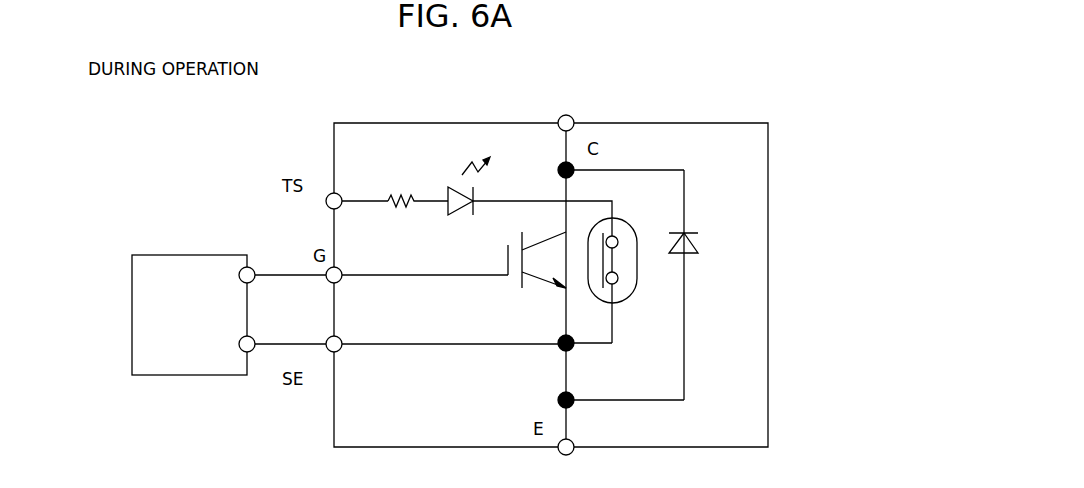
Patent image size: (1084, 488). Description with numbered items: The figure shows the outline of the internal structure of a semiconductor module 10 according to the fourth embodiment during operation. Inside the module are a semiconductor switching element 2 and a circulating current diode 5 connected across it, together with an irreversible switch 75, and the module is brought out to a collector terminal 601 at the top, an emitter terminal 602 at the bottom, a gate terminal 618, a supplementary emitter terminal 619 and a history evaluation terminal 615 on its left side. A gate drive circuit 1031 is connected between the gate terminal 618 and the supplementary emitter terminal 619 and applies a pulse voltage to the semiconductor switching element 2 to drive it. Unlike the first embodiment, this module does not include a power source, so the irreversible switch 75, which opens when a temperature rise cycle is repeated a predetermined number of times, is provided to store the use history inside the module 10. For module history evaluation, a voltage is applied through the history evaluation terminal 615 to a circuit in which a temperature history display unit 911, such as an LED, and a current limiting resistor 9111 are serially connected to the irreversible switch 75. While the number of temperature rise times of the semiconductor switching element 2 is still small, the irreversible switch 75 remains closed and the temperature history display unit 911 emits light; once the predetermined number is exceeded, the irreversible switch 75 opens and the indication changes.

The semiconductor module 10 is at (712, 123).
The collector terminal 601 is at (574, 118).
The emitter terminal 602 is at (572, 452).
The gate drive circuit 1031 is at (165, 362).
The history evaluation terminal 615 is at (326, 206).
The gate terminal 618 is at (340, 266).
The supplementary emitter terminal 619 is at (340, 338).
The current limiting resistor 9111 is at (400, 190).
The temperature history display unit 911 is at (450, 175).
The semiconductor switching element 2 is at (540, 290).
The irreversible switch 75 is at (637, 288).
The circulating current diode 5 is at (703, 242).